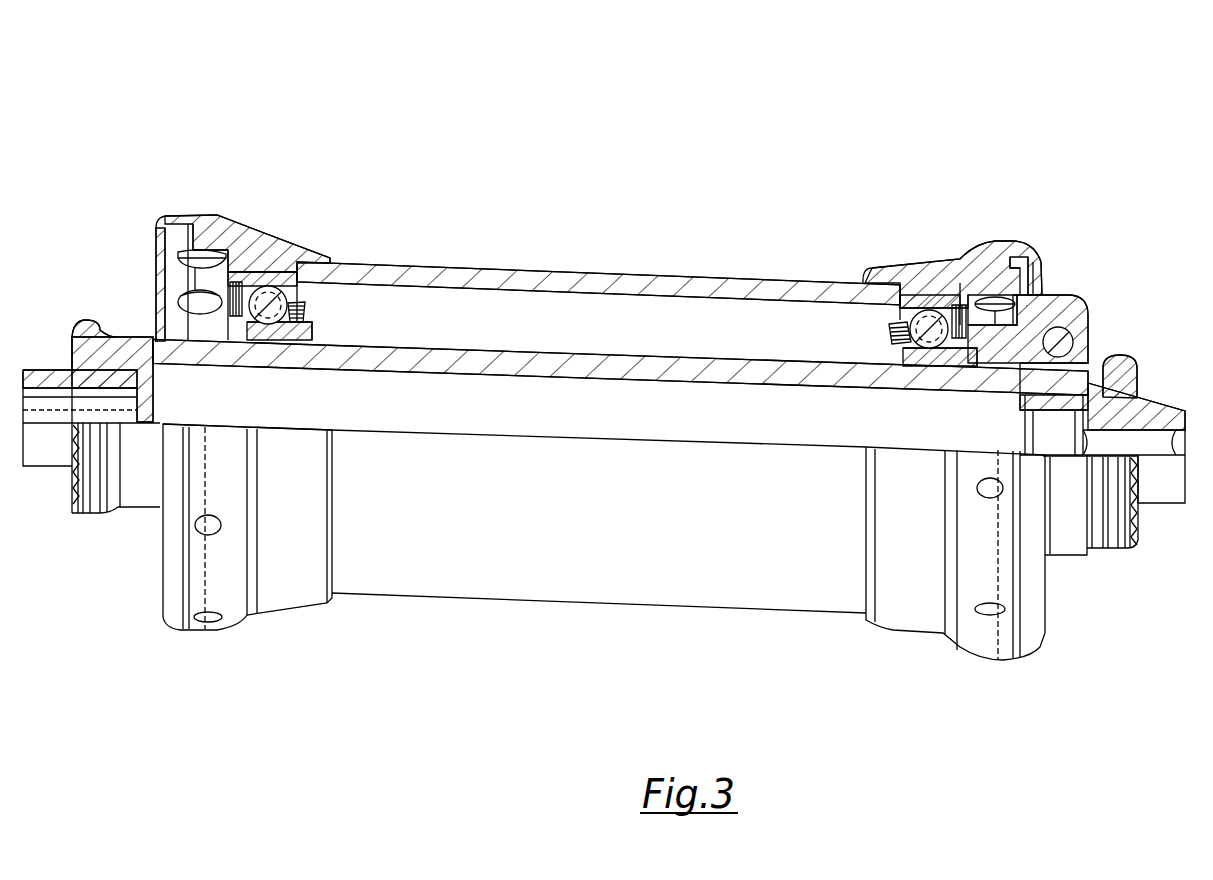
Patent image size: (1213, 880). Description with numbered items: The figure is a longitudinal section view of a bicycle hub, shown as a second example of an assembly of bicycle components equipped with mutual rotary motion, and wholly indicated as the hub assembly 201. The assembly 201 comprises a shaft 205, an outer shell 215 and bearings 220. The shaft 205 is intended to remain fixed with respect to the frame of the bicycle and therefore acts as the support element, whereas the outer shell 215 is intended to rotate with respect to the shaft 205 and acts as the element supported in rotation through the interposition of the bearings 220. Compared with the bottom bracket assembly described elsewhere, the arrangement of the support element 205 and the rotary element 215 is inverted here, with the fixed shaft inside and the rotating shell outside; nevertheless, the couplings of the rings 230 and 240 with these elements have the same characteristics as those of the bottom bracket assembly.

The hub assembly 201 is at (303, 150).
The shaft 205 is at (503, 371).
The outer shell 215 is at (540, 278).
The bearings 220 is at (316, 314).
The ring 230 is at (286, 335).
The ring 240 is at (300, 248).